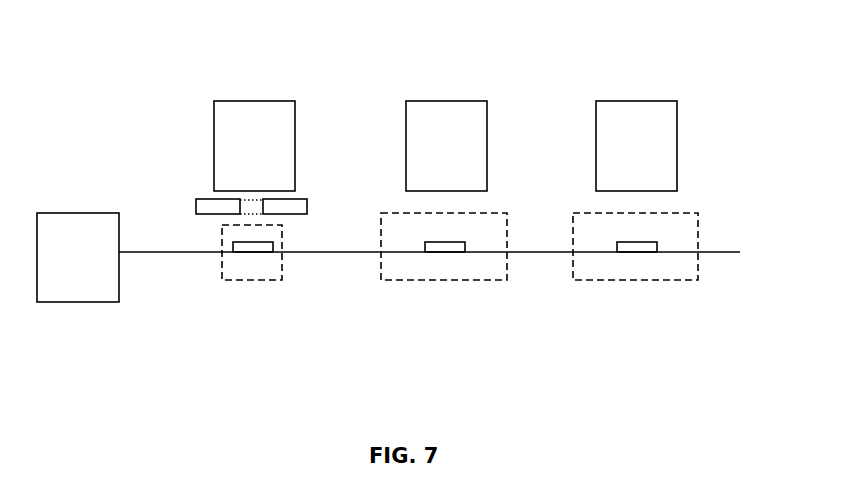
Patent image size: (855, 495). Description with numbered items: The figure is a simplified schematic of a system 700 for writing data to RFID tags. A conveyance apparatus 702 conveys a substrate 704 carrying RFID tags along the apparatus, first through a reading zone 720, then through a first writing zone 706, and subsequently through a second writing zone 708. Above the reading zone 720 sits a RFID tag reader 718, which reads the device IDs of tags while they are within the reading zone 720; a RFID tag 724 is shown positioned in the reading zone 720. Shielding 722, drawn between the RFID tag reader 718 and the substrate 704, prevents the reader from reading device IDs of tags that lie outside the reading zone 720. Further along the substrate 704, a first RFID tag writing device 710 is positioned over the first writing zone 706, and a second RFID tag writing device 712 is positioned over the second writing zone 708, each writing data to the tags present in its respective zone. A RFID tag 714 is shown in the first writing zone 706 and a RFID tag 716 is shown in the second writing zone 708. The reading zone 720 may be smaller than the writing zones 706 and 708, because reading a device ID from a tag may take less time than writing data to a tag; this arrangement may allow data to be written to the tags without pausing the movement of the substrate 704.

The system 700 is at (421, 403).
The conveyance apparatus 702 is at (119, 290).
The substrate 704 is at (163, 252).
The first writing zone 706 is at (507, 272).
The second writing zone 708 is at (698, 272).
The first RFID tag writing device 710 is at (448, 101).
The second RFID tag writing device 712 is at (632, 101).
The RFID tag 714 is at (450, 252).
The RFID tag 716 is at (657, 246).
The RFID tag reader 718 is at (257, 101).
The reading zone 720 is at (282, 272).
The shielding 722 is at (197, 199).
The RFID tag 724 is at (258, 252).